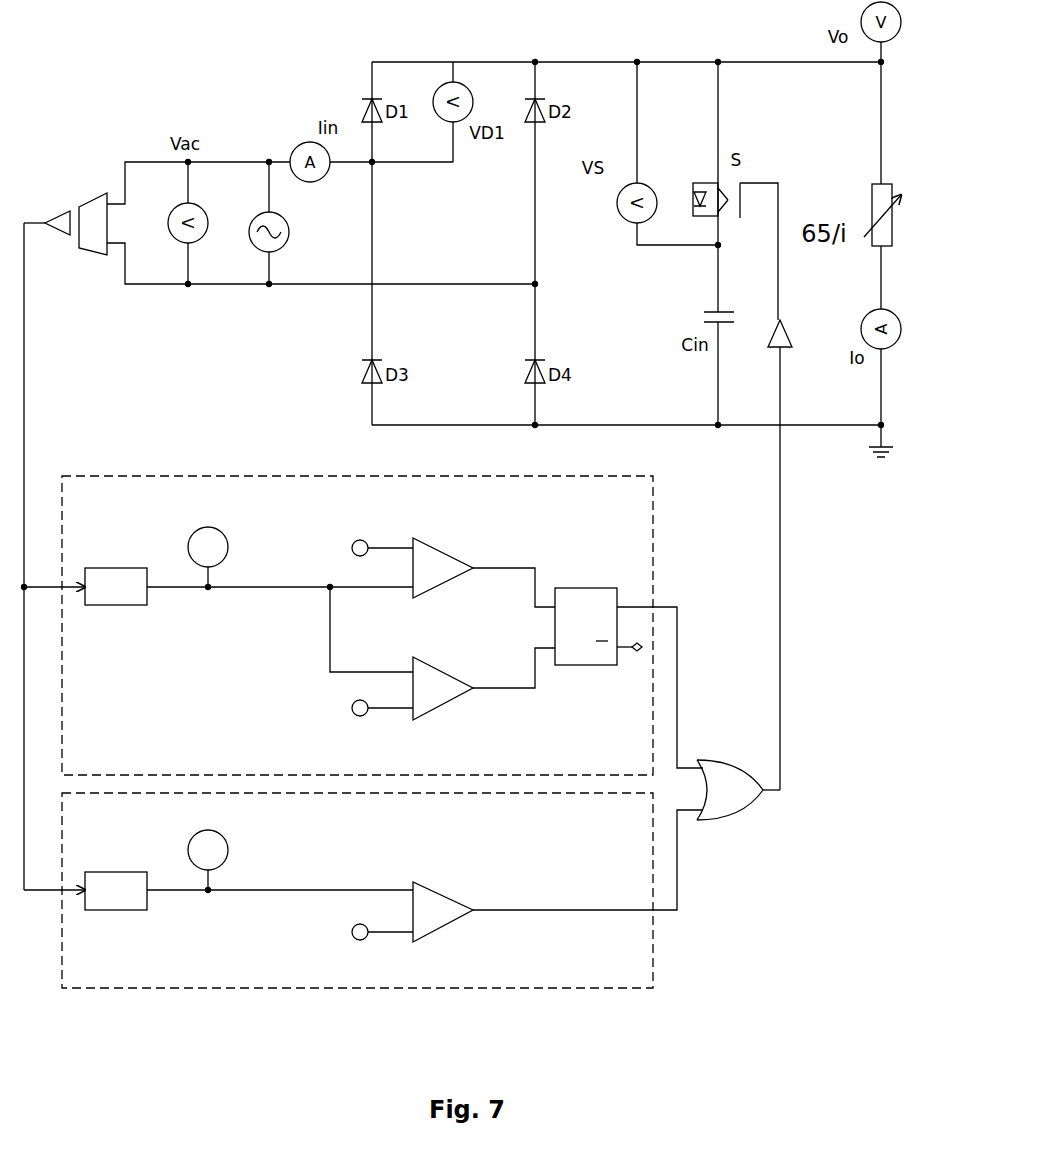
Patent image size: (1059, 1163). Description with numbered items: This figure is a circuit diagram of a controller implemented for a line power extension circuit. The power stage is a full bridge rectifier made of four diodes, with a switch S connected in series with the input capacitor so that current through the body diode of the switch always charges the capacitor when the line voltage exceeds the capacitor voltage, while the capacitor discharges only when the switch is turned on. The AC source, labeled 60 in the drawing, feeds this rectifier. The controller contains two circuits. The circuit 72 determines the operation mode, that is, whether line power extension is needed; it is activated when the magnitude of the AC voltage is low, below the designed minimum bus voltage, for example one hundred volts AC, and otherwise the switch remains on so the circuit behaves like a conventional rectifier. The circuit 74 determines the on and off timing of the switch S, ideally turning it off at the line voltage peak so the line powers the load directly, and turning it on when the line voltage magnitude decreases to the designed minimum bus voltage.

The AC voltage source 60 is at (277, 240).
The circuit used to determine on/off timing of the switch 74 is at (193, 475).
The circuit used to determine the operation mode of the control circuit 72 is at (655, 952).